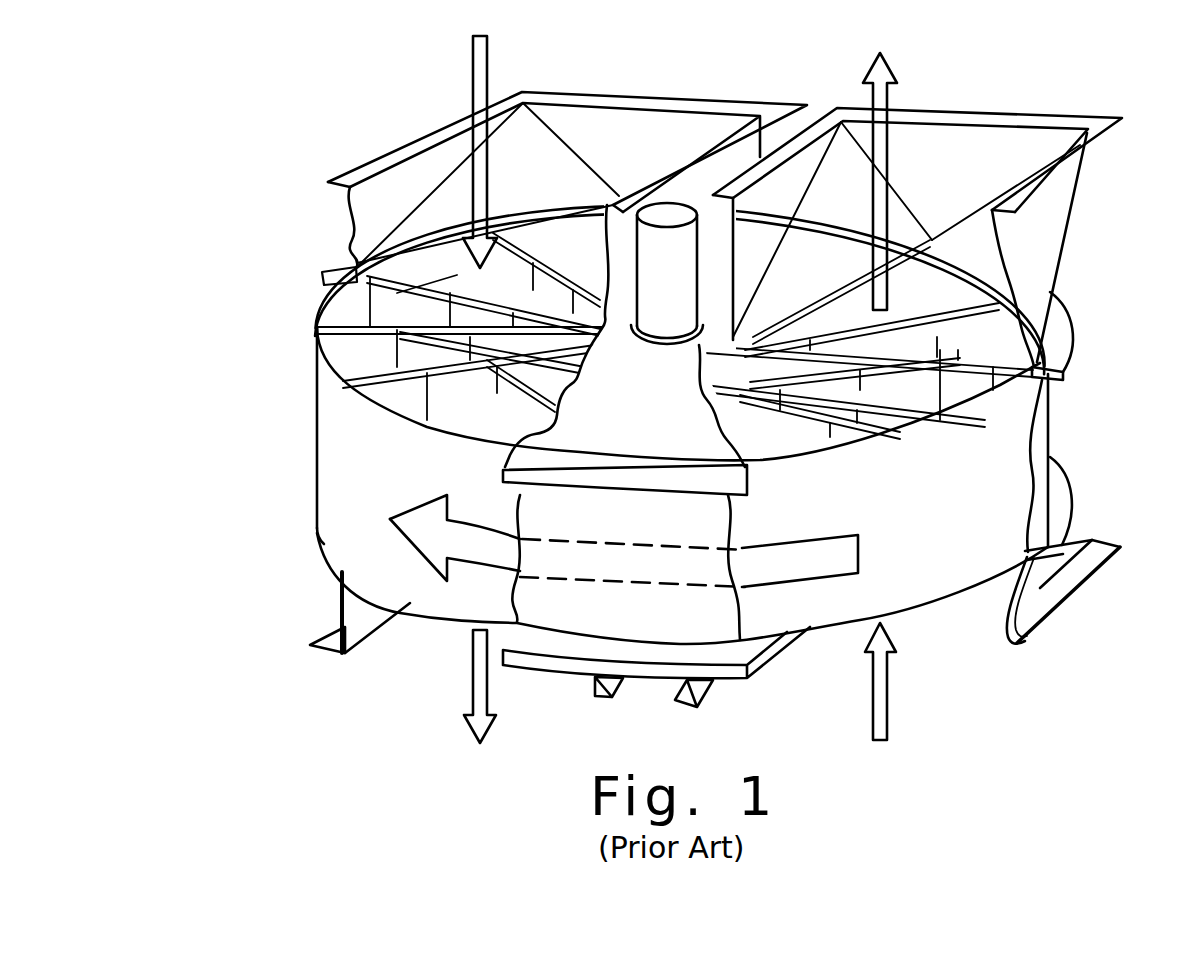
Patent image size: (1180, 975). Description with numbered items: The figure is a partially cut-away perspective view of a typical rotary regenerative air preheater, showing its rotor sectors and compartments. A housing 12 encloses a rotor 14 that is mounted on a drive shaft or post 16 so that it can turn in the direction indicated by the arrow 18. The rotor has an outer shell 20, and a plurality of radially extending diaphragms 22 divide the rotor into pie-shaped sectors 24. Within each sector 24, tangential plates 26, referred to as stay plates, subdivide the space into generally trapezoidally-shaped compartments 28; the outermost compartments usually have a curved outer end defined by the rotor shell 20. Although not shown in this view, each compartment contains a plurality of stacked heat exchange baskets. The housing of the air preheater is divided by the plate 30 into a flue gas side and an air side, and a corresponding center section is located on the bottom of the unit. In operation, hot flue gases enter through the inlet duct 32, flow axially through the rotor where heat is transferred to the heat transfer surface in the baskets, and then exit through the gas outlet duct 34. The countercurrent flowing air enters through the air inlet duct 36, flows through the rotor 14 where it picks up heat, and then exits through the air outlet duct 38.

The housing 12 is at (1068, 413).
The rotor 14 is at (300, 392).
The drive shaft or post 16 is at (680, 262).
The arrow 18 is at (391, 519).
The outer shell 20 is at (358, 545).
The diaphragms 22 is at (352, 433).
The sectors 24 is at (345, 298).
The tangential plates 26 is at (908, 418).
The compartments 28 is at (355, 366).
The plate 30 is at (680, 443).
The inlet duct 32 is at (597, 130).
The gas outlet duct 34 is at (363, 623).
The air inlet duct 36 is at (1033, 580).
The air outlet duct 38 is at (943, 147).